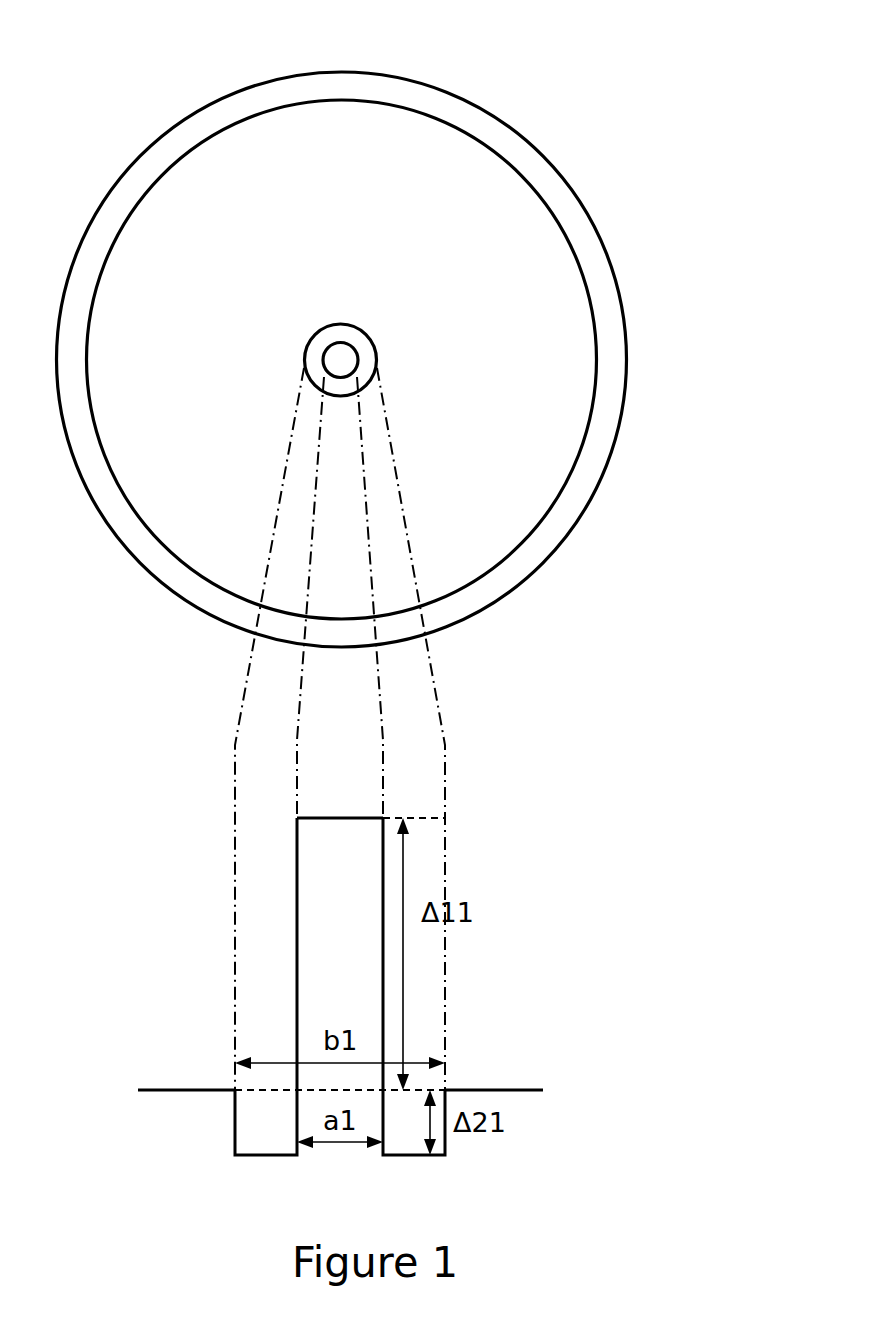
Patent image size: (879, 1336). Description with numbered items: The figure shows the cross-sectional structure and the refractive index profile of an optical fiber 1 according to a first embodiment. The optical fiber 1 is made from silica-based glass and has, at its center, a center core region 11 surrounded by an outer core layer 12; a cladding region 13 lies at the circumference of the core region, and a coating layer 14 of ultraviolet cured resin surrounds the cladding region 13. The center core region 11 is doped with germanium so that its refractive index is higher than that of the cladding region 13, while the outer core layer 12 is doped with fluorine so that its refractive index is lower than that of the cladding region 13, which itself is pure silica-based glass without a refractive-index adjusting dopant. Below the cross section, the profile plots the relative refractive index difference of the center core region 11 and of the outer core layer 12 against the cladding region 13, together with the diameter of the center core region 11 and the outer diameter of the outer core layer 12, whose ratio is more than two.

The optical fiber 1 is at (382, 323).
The center core region 11 is at (340, 360).
The outer core layer 12 is at (350, 380).
The cladding region 13 is at (530, 467).
The coating layer 14 is at (547, 527).